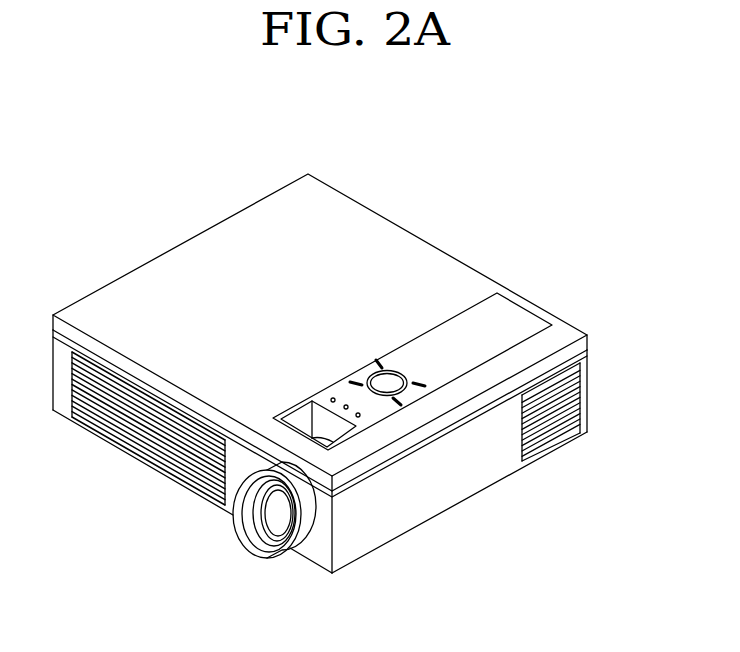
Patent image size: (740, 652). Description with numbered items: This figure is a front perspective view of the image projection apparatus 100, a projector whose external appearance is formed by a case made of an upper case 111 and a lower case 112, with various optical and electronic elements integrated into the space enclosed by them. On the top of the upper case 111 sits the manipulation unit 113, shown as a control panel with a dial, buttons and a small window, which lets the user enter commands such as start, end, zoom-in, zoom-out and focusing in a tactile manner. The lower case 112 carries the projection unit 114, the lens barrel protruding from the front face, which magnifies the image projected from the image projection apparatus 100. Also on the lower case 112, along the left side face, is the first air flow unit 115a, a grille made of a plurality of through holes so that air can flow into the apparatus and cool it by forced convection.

The image projection apparatus 100 is at (354, 384).
The upper case 111 is at (583, 342).
The lower case 112 is at (582, 385).
The manipulation unit 113 is at (380, 413).
The projection unit 114 is at (280, 513).
The first air flow unit 115a is at (143, 438).